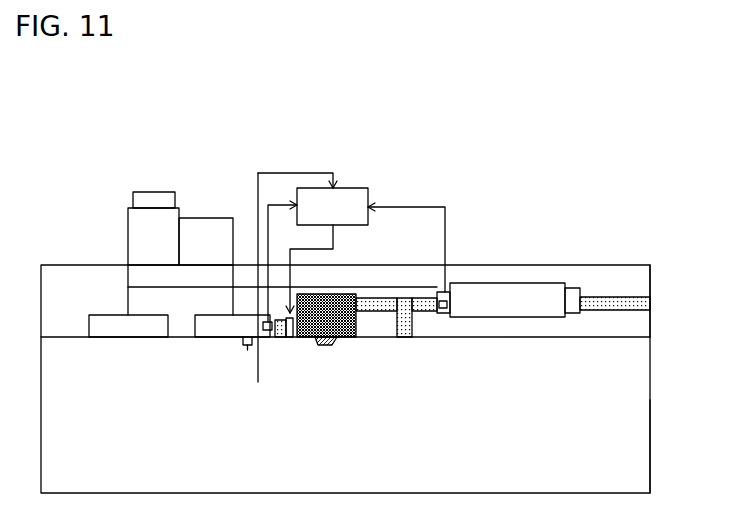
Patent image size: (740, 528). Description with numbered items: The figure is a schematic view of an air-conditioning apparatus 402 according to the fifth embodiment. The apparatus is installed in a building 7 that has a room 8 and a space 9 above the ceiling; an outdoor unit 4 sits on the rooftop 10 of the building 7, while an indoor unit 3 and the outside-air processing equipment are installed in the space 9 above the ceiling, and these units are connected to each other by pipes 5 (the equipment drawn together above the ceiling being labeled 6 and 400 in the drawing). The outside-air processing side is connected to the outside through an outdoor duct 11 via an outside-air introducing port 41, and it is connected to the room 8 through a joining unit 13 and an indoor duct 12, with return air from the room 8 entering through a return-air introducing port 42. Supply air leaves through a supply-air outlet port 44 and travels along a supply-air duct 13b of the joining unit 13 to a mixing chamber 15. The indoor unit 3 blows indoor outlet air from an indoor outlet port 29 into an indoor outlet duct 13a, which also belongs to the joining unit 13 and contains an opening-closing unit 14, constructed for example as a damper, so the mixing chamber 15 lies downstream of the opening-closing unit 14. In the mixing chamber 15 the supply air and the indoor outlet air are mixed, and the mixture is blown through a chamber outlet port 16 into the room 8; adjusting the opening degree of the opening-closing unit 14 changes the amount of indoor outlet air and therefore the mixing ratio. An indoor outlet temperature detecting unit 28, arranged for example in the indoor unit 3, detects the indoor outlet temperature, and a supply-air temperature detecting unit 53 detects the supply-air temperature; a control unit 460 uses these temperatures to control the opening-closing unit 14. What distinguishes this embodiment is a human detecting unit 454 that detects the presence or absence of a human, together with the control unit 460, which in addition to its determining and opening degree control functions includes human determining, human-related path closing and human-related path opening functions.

The indoor unit 3 is at (92, 334).
The outdoor unit 4 is at (136, 222).
The pipes 5 is at (192, 218).
The optical sensor module 6 is at (208, 201).
The building 7 is at (650, 370).
The room 8 is at (645, 417).
The space above a ceiling 9 is at (648, 281).
The rooftop 10 is at (58, 265).
The outdoor duct 11 is at (627, 300).
The indoor duct 12 is at (409, 337).
The joining unit 13 is at (330, 418).
The indoor outlet duct 13a is at (280, 337).
The supply-air duct 13b is at (371, 312).
The opening-closing unit 14 is at (291, 338).
The mixing chamber 15 is at (350, 338).
The chamber outlet port 16 is at (327, 347).
The indoor outlet temperature detecting unit 28 is at (258, 382).
The indoor outlet port 29 is at (280, 318).
The outside-air introducing port 41 is at (590, 296).
The return-air introducing port 42 is at (432, 314).
The supply-air outlet port 44 is at (437, 297).
The supply-air temperature detecting unit 53 is at (447, 314).
The drive unit 400 is at (536, 290).
The air-conditioning apparatus 402 is at (572, 193).
The human detecting unit 454 is at (247, 345).
The control unit 460 is at (350, 188).